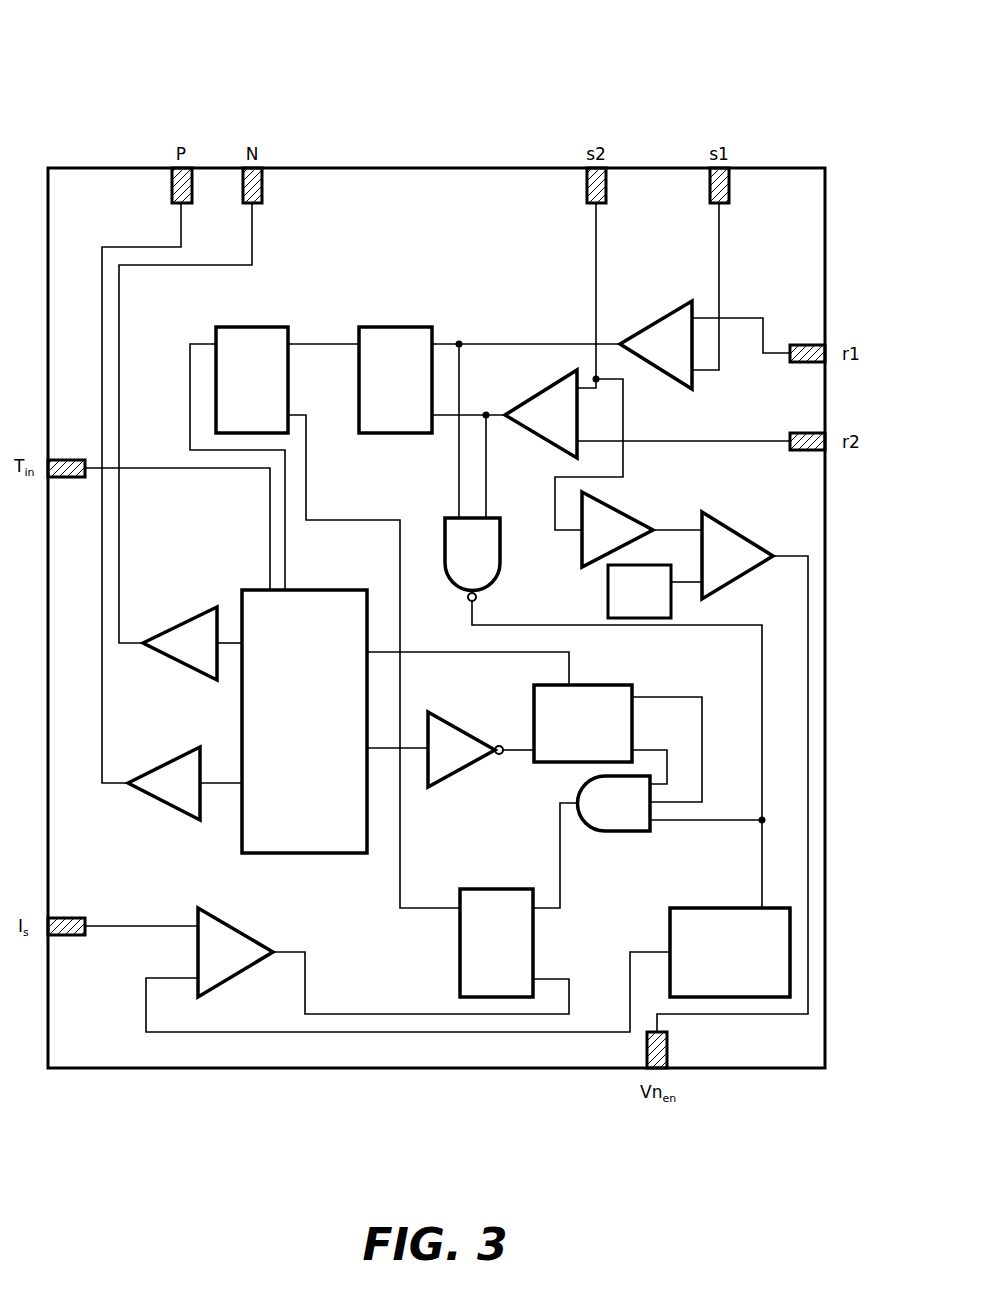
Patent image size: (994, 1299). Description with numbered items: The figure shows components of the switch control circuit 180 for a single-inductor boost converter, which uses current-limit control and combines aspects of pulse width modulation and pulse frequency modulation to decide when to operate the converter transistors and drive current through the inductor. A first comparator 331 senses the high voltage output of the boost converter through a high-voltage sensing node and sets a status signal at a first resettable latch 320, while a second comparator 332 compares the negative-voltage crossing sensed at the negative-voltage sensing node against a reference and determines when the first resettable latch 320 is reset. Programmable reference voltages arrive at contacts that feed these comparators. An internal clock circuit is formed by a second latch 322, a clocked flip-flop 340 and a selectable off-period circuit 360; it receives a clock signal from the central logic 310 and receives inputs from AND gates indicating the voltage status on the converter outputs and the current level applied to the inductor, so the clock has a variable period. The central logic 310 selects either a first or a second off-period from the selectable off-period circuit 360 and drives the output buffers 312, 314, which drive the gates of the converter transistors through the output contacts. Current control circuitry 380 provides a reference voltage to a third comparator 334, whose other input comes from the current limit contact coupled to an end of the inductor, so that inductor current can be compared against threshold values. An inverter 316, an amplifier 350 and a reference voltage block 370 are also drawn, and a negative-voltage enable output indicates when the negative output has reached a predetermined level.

The switch control circuit 180 is at (163, 62).
The central logic 310 is at (304, 721).
The output buffer 312 is at (180, 643).
The output buffer 314 is at (164, 783).
The inverter 316 is at (465, 749).
The first resettable latch 320 is at (395, 380).
The second latch 322 is at (496, 943).
The first comparator 331 is at (656, 345).
The second comparator 332 is at (541, 414).
The third comparator 334 is at (485, 754).
The clocked flip-flop 340 is at (252, 380).
The amplifier 350 is at (617, 529).
The selectable off-period circuit 360 is at (583, 723).
The reference voltage source 370 is at (639, 591).
The current control circuitry 380 is at (730, 952).